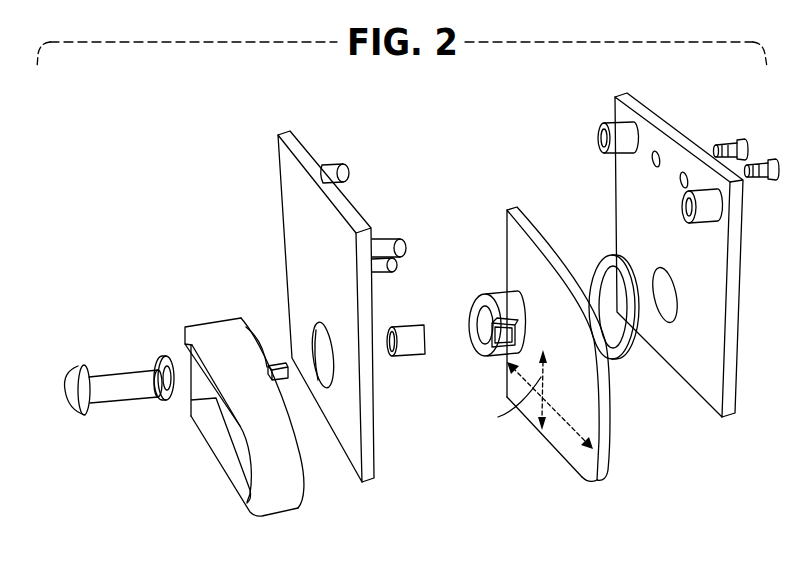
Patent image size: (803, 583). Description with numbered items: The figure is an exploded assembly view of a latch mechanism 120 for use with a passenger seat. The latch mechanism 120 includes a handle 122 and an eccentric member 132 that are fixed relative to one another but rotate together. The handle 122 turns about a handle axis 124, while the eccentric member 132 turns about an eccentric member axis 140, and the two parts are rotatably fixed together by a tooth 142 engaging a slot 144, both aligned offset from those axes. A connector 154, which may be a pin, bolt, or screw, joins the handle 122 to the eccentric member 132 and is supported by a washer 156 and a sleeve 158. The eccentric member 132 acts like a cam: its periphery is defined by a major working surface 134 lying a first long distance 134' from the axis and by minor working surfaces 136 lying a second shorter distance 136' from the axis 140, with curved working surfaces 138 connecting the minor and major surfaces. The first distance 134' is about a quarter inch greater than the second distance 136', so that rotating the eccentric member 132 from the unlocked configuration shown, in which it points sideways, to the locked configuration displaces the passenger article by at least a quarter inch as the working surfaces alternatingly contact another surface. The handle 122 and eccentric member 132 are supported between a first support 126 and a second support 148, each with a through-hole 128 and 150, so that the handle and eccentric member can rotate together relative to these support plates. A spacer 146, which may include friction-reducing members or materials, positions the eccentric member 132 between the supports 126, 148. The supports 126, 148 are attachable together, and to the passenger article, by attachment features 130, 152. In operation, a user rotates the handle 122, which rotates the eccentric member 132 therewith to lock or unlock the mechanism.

The latch mechanism 120 is at (233, 175).
The handle 122 is at (219, 418).
The handle axis 124 is at (198, 376).
The first support 126 is at (344, 299).
The through-hole 128 is at (318, 333).
The attachment feature 130 is at (333, 168).
The eccentric member 132 is at (564, 343).
The major working surface 134 is at (593, 345).
The first long distance 134' is at (550, 385).
The minor working surface 136 is at (516, 317).
The second shorter distance 136' is at (501, 403).
The curved working surface 138 is at (597, 480).
The eccentric member axis 140 is at (465, 295).
The tooth 142 is at (278, 362).
The slot 144 is at (493, 323).
The spacer 146 is at (620, 355).
The second support 148 is at (681, 255).
The through-hole 150 is at (655, 279).
The attachment feature 152 is at (605, 138).
The connector 154 is at (72, 400).
The washer 156 is at (158, 400).
The sleeve 158 is at (407, 342).